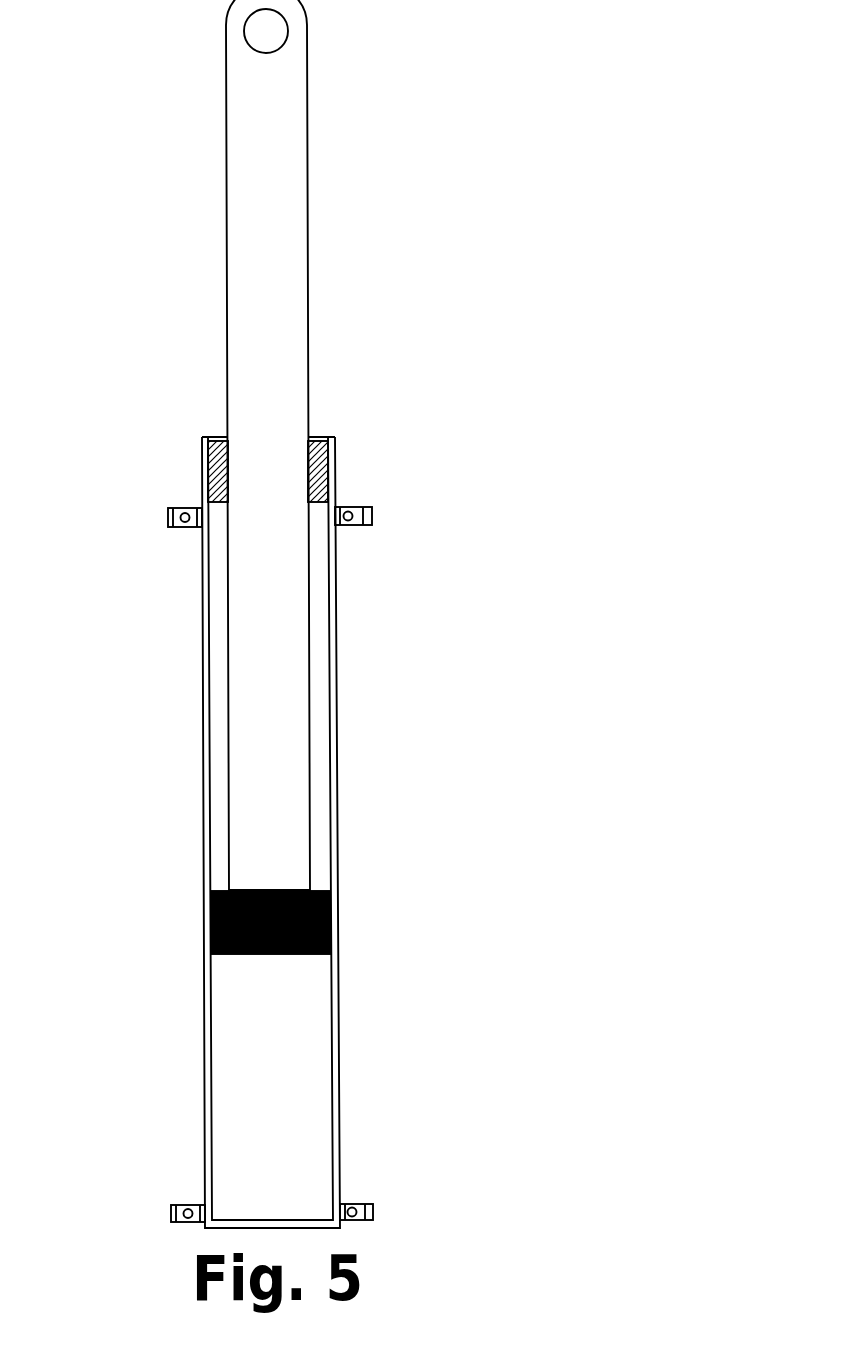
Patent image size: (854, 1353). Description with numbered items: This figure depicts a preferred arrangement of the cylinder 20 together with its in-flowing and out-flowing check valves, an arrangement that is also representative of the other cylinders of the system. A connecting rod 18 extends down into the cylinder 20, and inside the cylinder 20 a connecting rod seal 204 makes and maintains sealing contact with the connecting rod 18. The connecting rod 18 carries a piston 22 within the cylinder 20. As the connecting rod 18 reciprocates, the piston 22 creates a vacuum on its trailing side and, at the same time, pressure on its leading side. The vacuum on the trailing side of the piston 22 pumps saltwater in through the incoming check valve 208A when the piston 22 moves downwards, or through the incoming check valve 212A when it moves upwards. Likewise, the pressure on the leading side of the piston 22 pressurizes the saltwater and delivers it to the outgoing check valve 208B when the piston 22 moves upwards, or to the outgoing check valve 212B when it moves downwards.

The connecting rod 18 is at (290, 249).
The cylinder 20 is at (334, 740).
The piston 22 is at (322, 890).
The connecting rod seal 204 is at (312, 468).
The incoming check valve 208A is at (168, 522).
The outgoing check valve 208B is at (372, 519).
The incoming check valve 212A is at (175, 1207).
The outgoing check valve 212B is at (358, 1208).